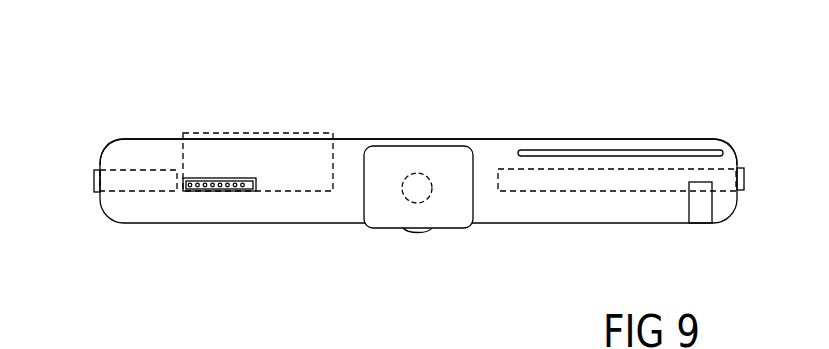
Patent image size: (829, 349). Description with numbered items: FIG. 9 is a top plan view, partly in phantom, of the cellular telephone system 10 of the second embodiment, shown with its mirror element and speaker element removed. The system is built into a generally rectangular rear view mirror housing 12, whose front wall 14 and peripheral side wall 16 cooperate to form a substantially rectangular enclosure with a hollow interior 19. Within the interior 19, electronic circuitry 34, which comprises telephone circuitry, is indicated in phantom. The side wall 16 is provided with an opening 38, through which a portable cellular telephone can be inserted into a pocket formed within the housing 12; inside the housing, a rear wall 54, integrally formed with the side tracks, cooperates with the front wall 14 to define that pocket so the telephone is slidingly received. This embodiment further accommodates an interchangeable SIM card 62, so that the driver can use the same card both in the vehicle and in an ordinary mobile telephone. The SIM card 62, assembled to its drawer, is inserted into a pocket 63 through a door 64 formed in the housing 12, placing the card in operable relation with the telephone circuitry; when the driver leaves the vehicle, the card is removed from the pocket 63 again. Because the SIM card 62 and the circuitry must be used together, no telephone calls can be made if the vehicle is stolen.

The cellular telephone system 10 is at (643, 105).
The rear view mirror housing 12 is at (733, 217).
The front wall 14 is at (552, 223).
The peripheral side wall 16 is at (112, 212).
The hollow interior 19 is at (692, 152).
The electronic circuitry 34 is at (292, 150).
The opening 38 is at (712, 172).
The rear wall 54 is at (505, 139).
The SIM card 62 is at (136, 178).
The pocket 63 is at (218, 178).
The door 64 is at (95, 183).